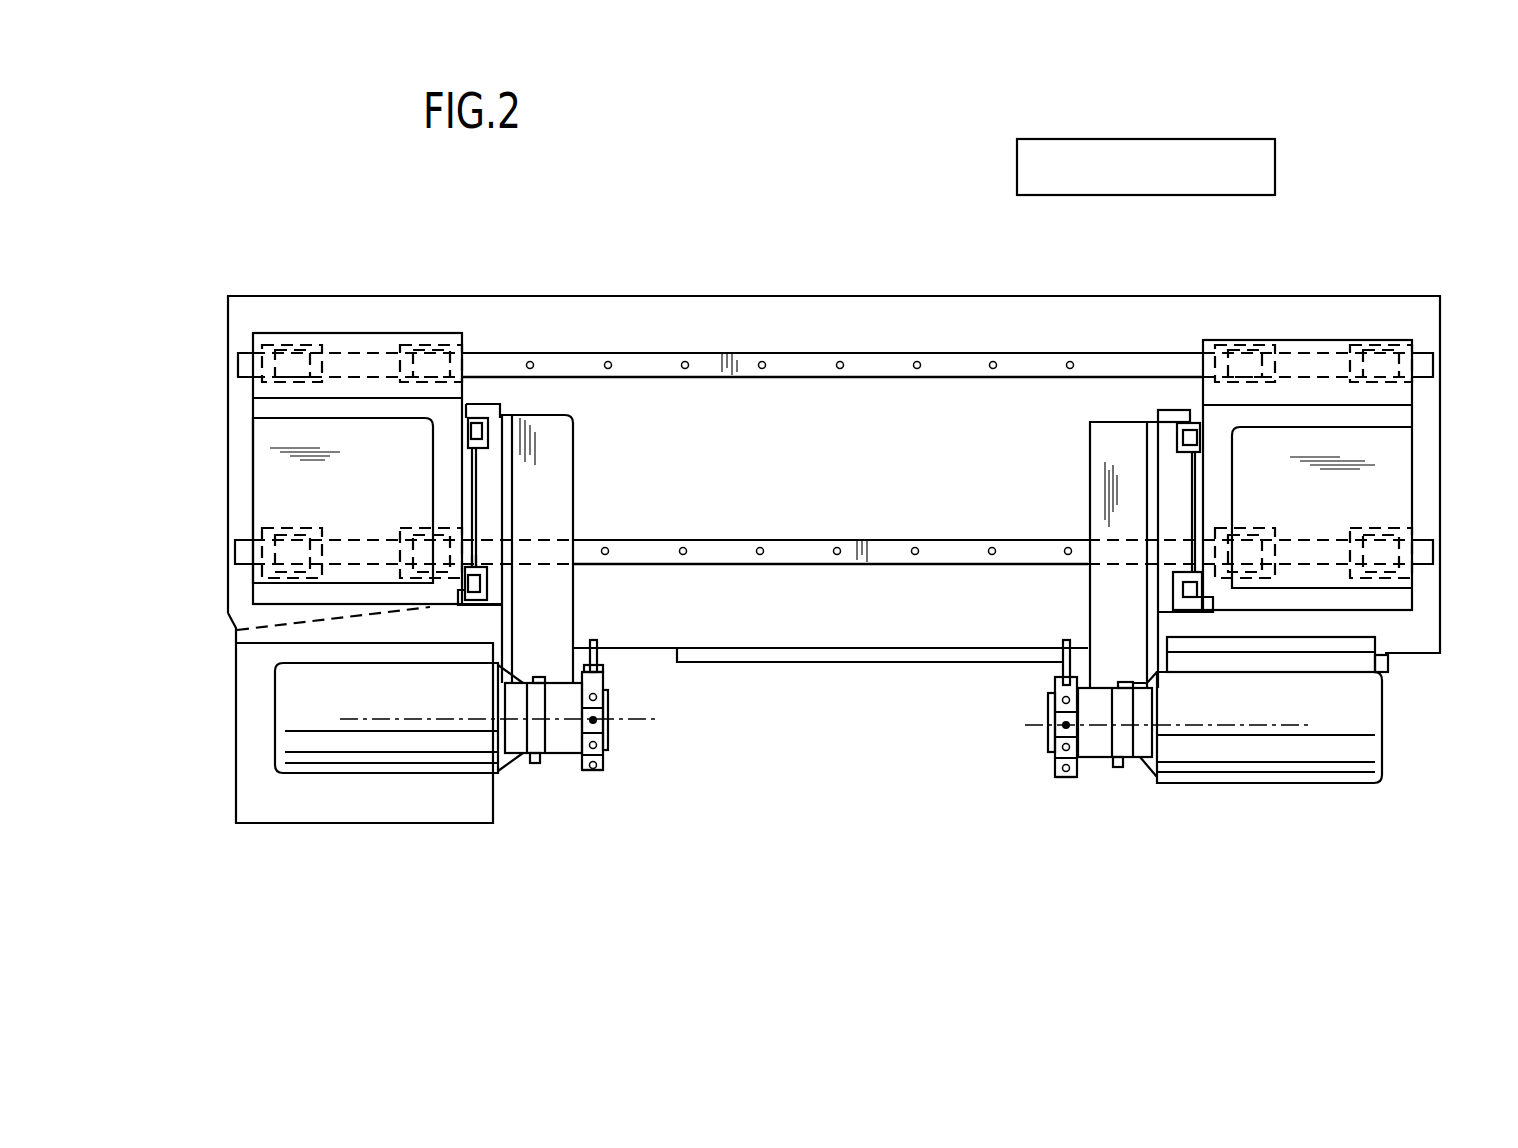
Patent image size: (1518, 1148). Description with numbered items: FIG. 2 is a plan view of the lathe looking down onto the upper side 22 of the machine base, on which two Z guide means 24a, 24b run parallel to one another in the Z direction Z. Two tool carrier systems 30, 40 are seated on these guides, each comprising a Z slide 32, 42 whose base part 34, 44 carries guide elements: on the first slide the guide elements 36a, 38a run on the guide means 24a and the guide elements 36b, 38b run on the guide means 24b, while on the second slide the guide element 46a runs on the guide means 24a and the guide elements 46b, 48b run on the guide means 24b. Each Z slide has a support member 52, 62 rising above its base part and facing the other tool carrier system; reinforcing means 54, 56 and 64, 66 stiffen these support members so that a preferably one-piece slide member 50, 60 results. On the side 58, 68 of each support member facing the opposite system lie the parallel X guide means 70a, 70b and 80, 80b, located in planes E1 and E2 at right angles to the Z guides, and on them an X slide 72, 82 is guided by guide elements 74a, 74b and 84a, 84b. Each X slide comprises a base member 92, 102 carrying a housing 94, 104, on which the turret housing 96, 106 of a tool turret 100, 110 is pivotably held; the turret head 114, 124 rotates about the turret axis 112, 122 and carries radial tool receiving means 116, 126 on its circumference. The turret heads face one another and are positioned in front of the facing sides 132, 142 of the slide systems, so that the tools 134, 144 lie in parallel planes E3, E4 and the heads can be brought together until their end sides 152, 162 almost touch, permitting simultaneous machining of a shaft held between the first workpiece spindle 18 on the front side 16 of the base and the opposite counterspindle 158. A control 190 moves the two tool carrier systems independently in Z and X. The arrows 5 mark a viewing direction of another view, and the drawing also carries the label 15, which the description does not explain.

The section line / viewing direction 5 is at (804, 210).
The first drive unit 15 is at (582, 640).
The front side 16 is at (1078, 648).
The first workpiece spindle 18 is at (523, 764).
The upper side 22 is at (820, 430).
The Z guide means 24a is at (783, 364).
The Z guide means 24b is at (817, 548).
The tool carrier system 30 is at (383, 320).
The Z slide 32 is at (334, 320).
The base part 34 is at (294, 451).
The guide element 36a is at (290, 345).
The guide element 36b is at (268, 572).
The guide element 38a is at (440, 345).
The guide element 38b is at (240, 628).
The tool carrier system 40 is at (1316, 327).
The Z slide 42 is at (1252, 327).
The base part 44 is at (1386, 452).
The guide element 46a is at (1375, 345).
The guide element 46b is at (1388, 572).
The guide element 48b is at (1245, 345).
The slide member 50 is at (305, 497).
The support member 52 is at (540, 472).
The reinforcing means 54 is at (290, 400).
The reinforcing means 56 is at (305, 592).
The side 58 is at (510, 520).
The slide member 60 is at (1358, 513).
The support member 62 is at (1200, 522).
The reinforcing means 64 is at (1386, 420).
The reinforcing means 66 is at (1400, 612).
The side 68 is at (1193, 503).
The X guide means 70a is at (478, 418).
The X guide means 70b is at (487, 585).
The X slide 72 is at (573, 525).
The guide element 74a is at (475, 437).
The guide element 74b is at (478, 568).
The X guide means 80 is at (1188, 430).
The X guide means 80b is at (1190, 610).
The X slide 82 is at (1165, 520).
The guide element 84a is at (1186, 420).
The guide element 84b is at (1177, 577).
The base member 92 is at (500, 415).
The housing 94 is at (498, 443).
The turret housing 96 is at (565, 745).
The tool turret 100 is at (576, 793).
The base member 102 is at (1130, 465).
The housing 104 is at (1160, 460).
The turret housing 106 is at (1095, 745).
The tool turret 110 is at (1079, 792).
The turret axis 112 is at (605, 722).
The turret head 114 is at (609, 792).
The tool receiving means 116 is at (605, 735).
The turret axis 122 is at (1052, 727).
The turret head 124 is at (1042, 792).
The tool receiving means 126 is at (1052, 745).
The side 132 is at (545, 443).
The tool 134 is at (600, 652).
The side 142 is at (1090, 472).
The tool 144 is at (1055, 658).
The end side 152 is at (605, 694).
The counterspindle 158 is at (1165, 782).
The end side 162 is at (1050, 700).
The control 190 is at (1179, 184).
The Z direction Z is at (880, 398).
The plane E1 is at (470, 840).
The plane E2 is at (1195, 813).
The plane E3 is at (592, 777).
The plane E4 is at (1065, 790).